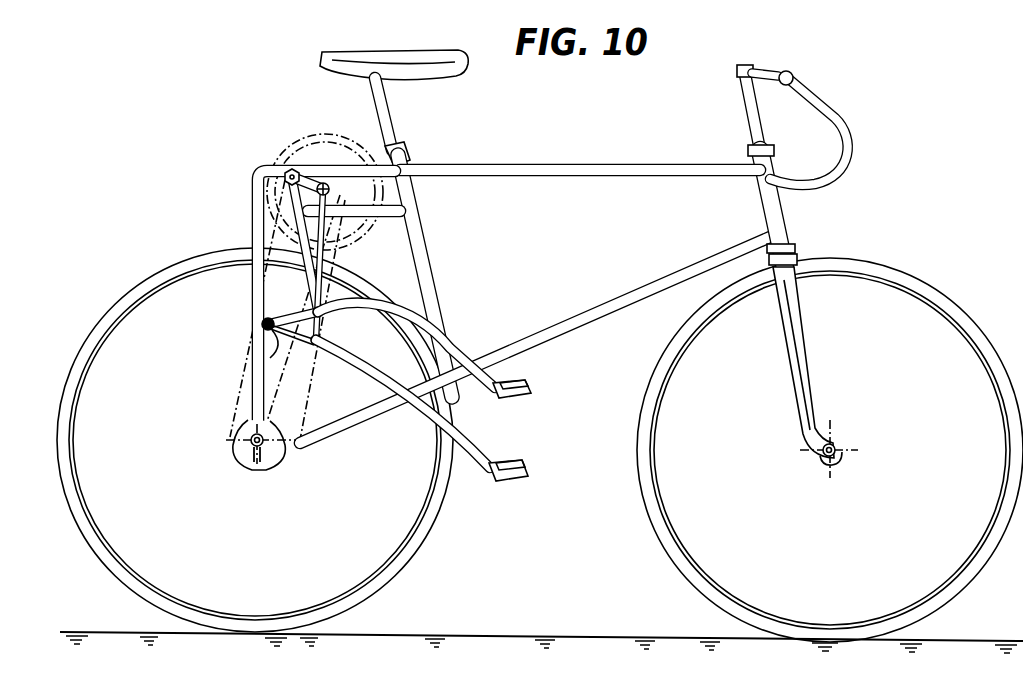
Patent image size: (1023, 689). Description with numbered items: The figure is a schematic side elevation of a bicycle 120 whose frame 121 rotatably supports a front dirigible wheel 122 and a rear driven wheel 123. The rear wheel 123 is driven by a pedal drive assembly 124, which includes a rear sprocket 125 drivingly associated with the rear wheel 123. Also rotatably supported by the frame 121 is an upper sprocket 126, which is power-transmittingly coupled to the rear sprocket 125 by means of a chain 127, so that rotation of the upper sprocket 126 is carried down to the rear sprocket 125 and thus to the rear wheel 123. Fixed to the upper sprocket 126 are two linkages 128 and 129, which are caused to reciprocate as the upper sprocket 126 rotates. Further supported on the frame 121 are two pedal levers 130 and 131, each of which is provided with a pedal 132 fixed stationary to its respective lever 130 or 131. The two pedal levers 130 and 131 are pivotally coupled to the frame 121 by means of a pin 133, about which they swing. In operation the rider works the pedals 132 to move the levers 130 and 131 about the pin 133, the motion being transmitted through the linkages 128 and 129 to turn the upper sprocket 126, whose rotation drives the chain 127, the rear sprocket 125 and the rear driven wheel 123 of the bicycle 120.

The bicycle 120 is at (836, 212).
The frame 121 is at (520, 165).
The front dirigible wheel 122 is at (667, 537).
The rear driven wheel 123 is at (414, 548).
The pedal drive assembly 124 is at (222, 165).
The rear sprocket 125 is at (250, 457).
The upper sprocket 126 is at (306, 140).
The chain 127 is at (232, 392).
The linkage 128 is at (263, 290).
The linkage 129 is at (398, 252).
The pedal lever 130 is at (412, 308).
The pedal lever 131 is at (466, 455).
The pedal 132 is at (535, 386).
The pin 133 is at (250, 364).